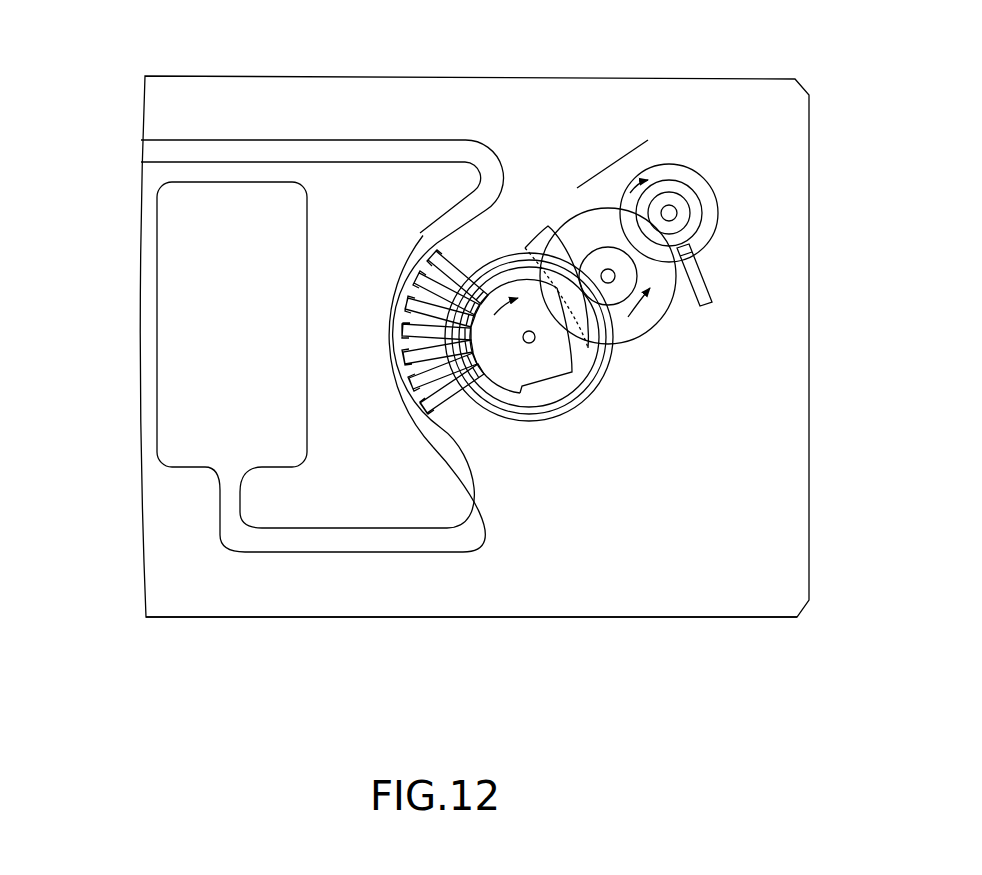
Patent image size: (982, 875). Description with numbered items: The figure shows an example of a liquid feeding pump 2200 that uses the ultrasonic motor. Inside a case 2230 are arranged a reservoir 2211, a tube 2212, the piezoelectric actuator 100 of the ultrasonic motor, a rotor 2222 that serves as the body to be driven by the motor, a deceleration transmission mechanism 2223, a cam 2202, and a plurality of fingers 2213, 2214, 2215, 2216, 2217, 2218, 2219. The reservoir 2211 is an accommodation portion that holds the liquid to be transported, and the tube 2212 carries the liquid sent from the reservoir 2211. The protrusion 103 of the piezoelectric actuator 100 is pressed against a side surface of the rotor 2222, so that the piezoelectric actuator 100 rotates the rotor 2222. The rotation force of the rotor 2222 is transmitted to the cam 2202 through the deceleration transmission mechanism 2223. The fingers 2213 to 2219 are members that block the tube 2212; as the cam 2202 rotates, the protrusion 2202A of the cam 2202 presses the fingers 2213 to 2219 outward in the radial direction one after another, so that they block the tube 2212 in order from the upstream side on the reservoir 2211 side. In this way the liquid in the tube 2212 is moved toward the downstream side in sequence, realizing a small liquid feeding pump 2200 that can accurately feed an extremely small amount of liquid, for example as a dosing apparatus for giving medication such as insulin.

The liquid feeding pump 2200 is at (633, 72).
The case 2230 is at (610, 617).
The reservoir 2211 is at (173, 225).
The tube 2212 is at (388, 540).
The finger 2213 is at (457, 408).
The finger 2214 is at (393, 403).
The finger 2215 is at (405, 362).
The finger 2216 is at (397, 332).
The finger 2217 is at (403, 300).
The finger 2218 is at (417, 274).
The finger 2219 is at (450, 262).
The cam 2202 is at (578, 372).
The protrusion 2202A is at (537, 405).
The deceleration transmission mechanism 2223 is at (572, 187).
The piezoelectric actuator 100 is at (693, 298).
The rotor 2222 is at (688, 183).
The protrusion 103 is at (707, 240).